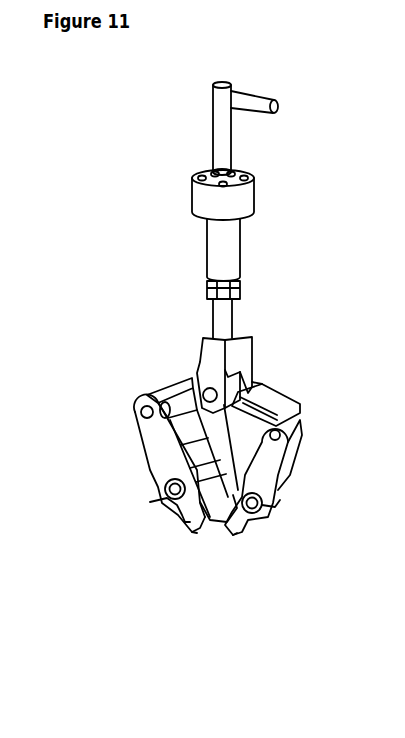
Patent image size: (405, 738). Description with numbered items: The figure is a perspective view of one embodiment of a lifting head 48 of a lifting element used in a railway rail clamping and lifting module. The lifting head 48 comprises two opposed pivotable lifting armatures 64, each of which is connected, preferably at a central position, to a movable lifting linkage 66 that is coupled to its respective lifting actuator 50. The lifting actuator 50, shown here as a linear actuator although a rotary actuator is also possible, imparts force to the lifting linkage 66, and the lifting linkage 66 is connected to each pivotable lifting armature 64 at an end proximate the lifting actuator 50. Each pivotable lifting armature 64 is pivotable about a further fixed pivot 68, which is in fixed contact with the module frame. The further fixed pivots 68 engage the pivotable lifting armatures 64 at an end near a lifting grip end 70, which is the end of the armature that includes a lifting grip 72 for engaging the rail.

The lifting head 48 is at (140, 178).
The lifting actuator 50 is at (260, 92).
The pivotable lifting armature 64 is at (139, 445).
The lifting linkage 66 is at (249, 348).
The further fixed pivot 68 is at (156, 490).
The lifting grip end 70 is at (180, 538).
The lifting grip 72 is at (232, 540).